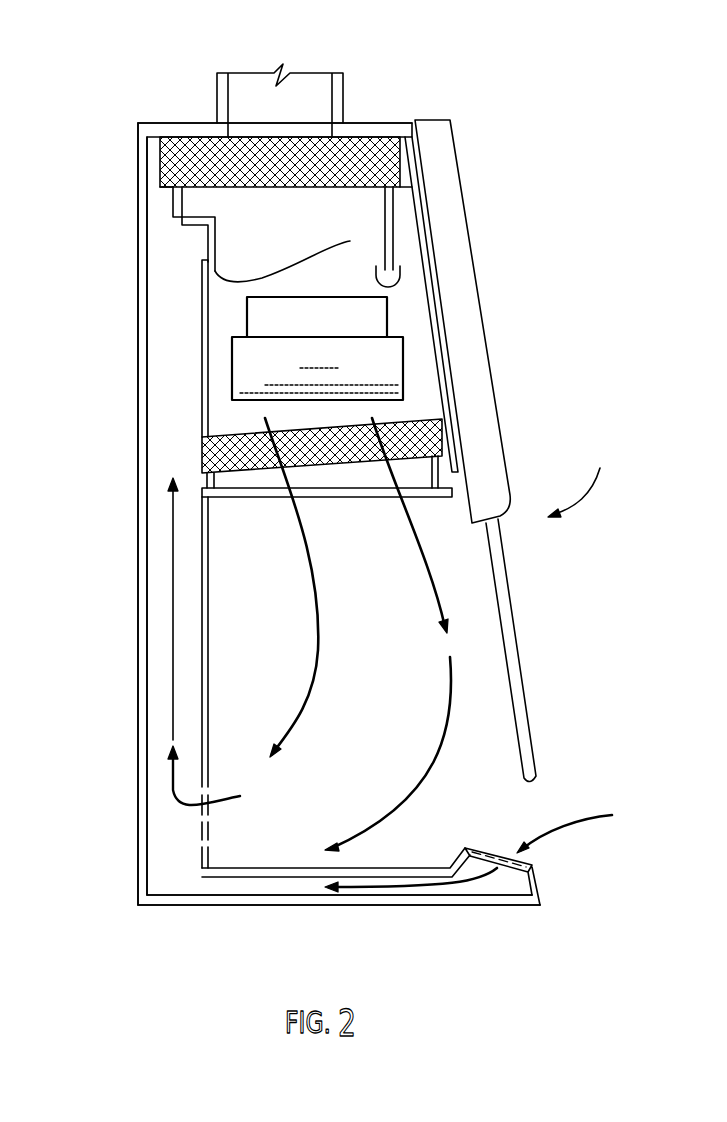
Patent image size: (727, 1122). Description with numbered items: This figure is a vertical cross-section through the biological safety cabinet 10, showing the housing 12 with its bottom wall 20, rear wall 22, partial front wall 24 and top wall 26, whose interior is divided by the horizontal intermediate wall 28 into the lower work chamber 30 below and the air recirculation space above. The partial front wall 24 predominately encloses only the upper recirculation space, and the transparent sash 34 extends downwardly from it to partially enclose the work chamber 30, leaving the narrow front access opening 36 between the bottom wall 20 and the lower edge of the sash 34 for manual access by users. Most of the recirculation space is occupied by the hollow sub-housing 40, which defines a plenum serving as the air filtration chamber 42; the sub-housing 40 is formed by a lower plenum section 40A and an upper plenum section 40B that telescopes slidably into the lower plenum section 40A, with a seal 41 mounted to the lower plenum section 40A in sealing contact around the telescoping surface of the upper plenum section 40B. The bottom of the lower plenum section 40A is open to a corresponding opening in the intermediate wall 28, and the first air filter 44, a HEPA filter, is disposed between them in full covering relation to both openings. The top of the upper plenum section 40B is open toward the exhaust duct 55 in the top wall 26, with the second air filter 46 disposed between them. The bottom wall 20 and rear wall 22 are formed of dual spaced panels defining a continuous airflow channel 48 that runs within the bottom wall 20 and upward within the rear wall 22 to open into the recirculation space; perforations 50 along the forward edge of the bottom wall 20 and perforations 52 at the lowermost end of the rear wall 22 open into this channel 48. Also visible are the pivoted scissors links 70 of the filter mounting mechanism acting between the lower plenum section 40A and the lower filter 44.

The biological safety cabinet 10 is at (574, 467).
The housing 12 is at (140, 200).
The bottom wall 20 is at (288, 868).
The rear wall 22 is at (140, 718).
The partial front wall 24 is at (462, 325).
The top wall 26 is at (167, 122).
The horizontal intermediate wall 28 is at (180, 682).
The lower work chamber 30 is at (361, 731).
The transparent sash 34 is at (532, 722).
The front access opening 36 is at (522, 812).
The sub-housing 40 is at (136, 312).
The lower plenum section 40A is at (203, 361).
The upper plenum section 40B is at (208, 248).
The seal 41 is at (385, 271).
The air filtration chamber 42 is at (303, 238).
The first air filter 44 is at (338, 457).
The second air filter 46 is at (363, 163).
The airflow channel 48 is at (245, 886).
The perforations 50 is at (488, 855).
The perforations 52 is at (210, 845).
The exhaust duct 55 is at (220, 102).
The scissors links 70 is at (290, 381).